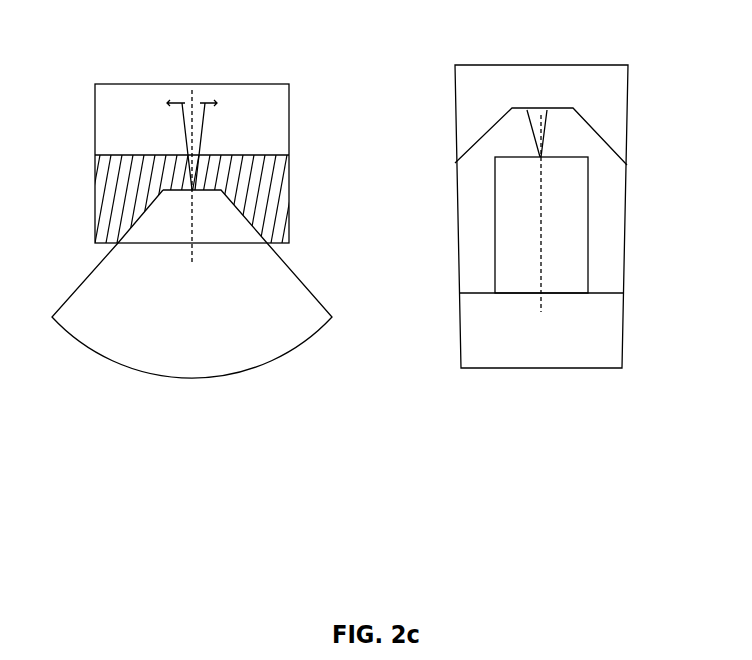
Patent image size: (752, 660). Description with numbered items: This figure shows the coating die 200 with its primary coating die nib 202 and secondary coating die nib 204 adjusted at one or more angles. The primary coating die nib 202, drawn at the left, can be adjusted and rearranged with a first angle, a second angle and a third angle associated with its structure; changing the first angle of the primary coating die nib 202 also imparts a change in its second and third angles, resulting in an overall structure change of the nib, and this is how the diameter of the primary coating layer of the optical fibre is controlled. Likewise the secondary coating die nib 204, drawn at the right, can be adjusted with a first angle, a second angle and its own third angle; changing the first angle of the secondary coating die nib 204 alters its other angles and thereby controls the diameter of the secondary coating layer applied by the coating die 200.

The coating die 200 is at (53, 30).
The primary coating die nib 202 is at (284, 193).
The secondary coating die nib 204 is at (620, 240).